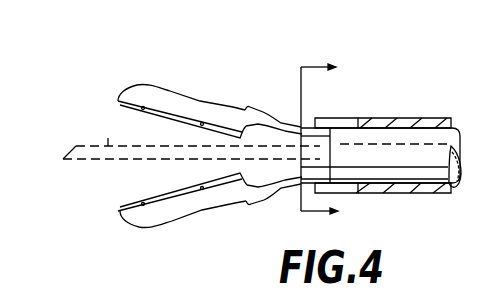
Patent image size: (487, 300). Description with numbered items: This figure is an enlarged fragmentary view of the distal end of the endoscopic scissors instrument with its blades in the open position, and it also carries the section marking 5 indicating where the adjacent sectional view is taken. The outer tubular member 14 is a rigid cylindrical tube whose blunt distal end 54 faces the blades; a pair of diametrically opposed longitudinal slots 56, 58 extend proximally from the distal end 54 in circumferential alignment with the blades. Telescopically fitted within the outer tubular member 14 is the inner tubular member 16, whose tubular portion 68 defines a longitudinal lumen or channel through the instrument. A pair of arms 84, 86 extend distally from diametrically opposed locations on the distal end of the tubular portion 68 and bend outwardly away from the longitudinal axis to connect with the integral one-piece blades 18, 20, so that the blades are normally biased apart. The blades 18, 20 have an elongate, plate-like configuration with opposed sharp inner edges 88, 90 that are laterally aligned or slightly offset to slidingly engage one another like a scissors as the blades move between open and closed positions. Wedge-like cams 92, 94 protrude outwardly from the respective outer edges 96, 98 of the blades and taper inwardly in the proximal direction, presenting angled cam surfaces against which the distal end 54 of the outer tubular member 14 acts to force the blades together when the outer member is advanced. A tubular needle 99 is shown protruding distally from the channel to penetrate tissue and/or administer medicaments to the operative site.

The section line 5- 5 is at (319, 143).
The outer tubular member 14 is at (381, 140).
The inner tubular member 16 is at (449, 125).
The blade 18 is at (203, 89).
The blade 20 is at (202, 229).
The distal end 54 is at (312, 119).
The longitudinal slot 56 is at (348, 118).
The longitudinal slot 58 is at (355, 191).
The tubular portion 68 is at (408, 118).
The arm 84 is at (274, 102).
The arm 86 is at (274, 208).
The inner edge 88 is at (172, 119).
The inner edge 90 is at (161, 192).
The wedge-like cam 92 is at (248, 107).
The wedge-like cam 94 is at (257, 204).
The outer edge 96 is at (172, 89).
The outer edge 98 is at (193, 219).
The tubular needle 99 is at (100, 134).